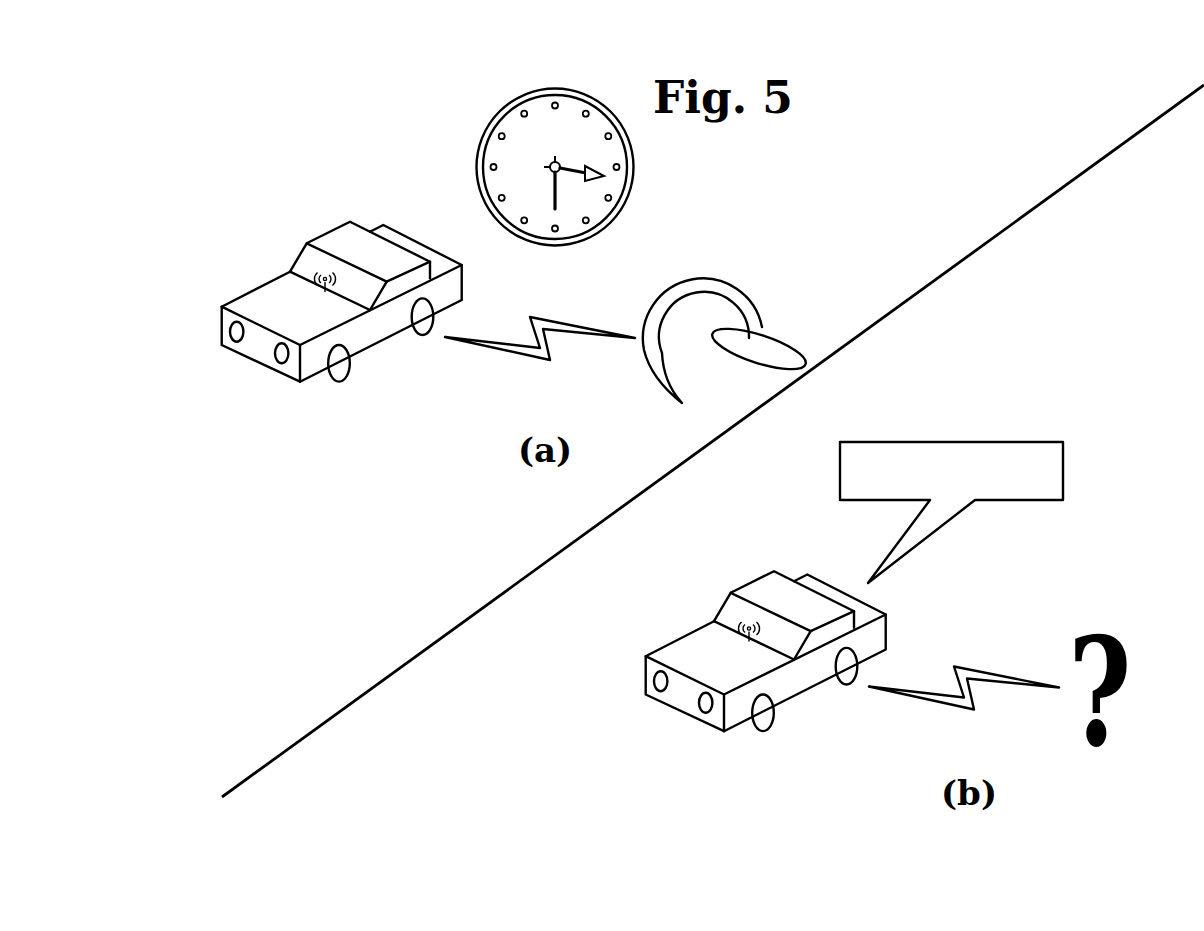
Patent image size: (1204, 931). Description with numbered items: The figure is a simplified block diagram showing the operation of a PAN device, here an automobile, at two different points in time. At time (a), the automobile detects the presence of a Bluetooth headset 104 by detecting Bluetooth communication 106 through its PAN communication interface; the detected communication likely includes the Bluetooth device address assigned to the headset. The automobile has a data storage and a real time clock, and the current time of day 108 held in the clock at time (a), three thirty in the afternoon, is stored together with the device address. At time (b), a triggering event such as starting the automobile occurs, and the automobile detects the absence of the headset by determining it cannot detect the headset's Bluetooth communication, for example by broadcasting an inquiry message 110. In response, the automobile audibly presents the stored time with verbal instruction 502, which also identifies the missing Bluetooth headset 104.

The PAN device 104 is at (735, 275).
The Bluetooth communication 106 is at (540, 363).
The current time of day 108 is at (478, 146).
The inquiry message 110 is at (964, 707).
The verbal instruction 502 is at (1047, 434).